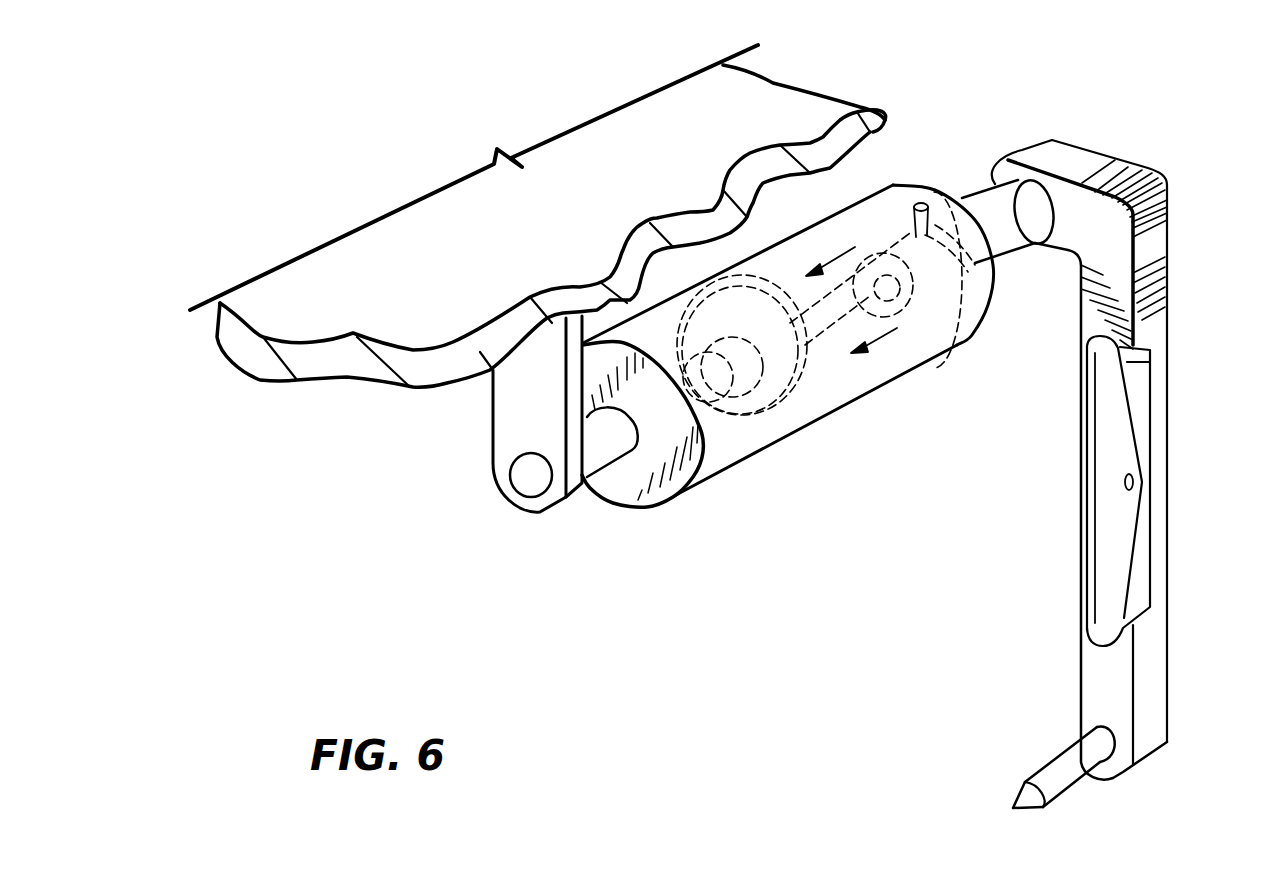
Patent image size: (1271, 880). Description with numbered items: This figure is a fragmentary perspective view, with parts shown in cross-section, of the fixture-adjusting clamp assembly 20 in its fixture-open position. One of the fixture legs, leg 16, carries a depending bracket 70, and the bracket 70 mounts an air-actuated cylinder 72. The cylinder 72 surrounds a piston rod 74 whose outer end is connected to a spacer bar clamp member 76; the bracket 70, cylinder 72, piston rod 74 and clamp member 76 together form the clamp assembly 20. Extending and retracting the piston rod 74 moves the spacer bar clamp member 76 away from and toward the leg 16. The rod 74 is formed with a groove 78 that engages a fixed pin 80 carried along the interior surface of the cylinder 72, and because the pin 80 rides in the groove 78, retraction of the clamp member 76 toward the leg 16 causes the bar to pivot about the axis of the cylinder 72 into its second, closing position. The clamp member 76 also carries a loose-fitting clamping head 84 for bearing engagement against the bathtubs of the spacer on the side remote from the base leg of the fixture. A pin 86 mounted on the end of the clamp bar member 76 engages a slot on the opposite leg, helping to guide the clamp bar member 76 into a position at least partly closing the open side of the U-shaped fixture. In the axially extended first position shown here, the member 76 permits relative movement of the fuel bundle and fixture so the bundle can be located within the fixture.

The leg 16 is at (383, 260).
The clamp assembly 20 is at (827, 653).
The depending bracket 70 is at (513, 410).
The air-actuated cylinder 72 is at (745, 463).
The piston rod 74 is at (795, 296).
The spacer bar clamp member 76 is at (1165, 258).
The groove 78 is at (951, 352).
The fixed pin 80 is at (914, 210).
The clamping head 84 is at (1120, 430).
The pin 86 is at (1057, 751).